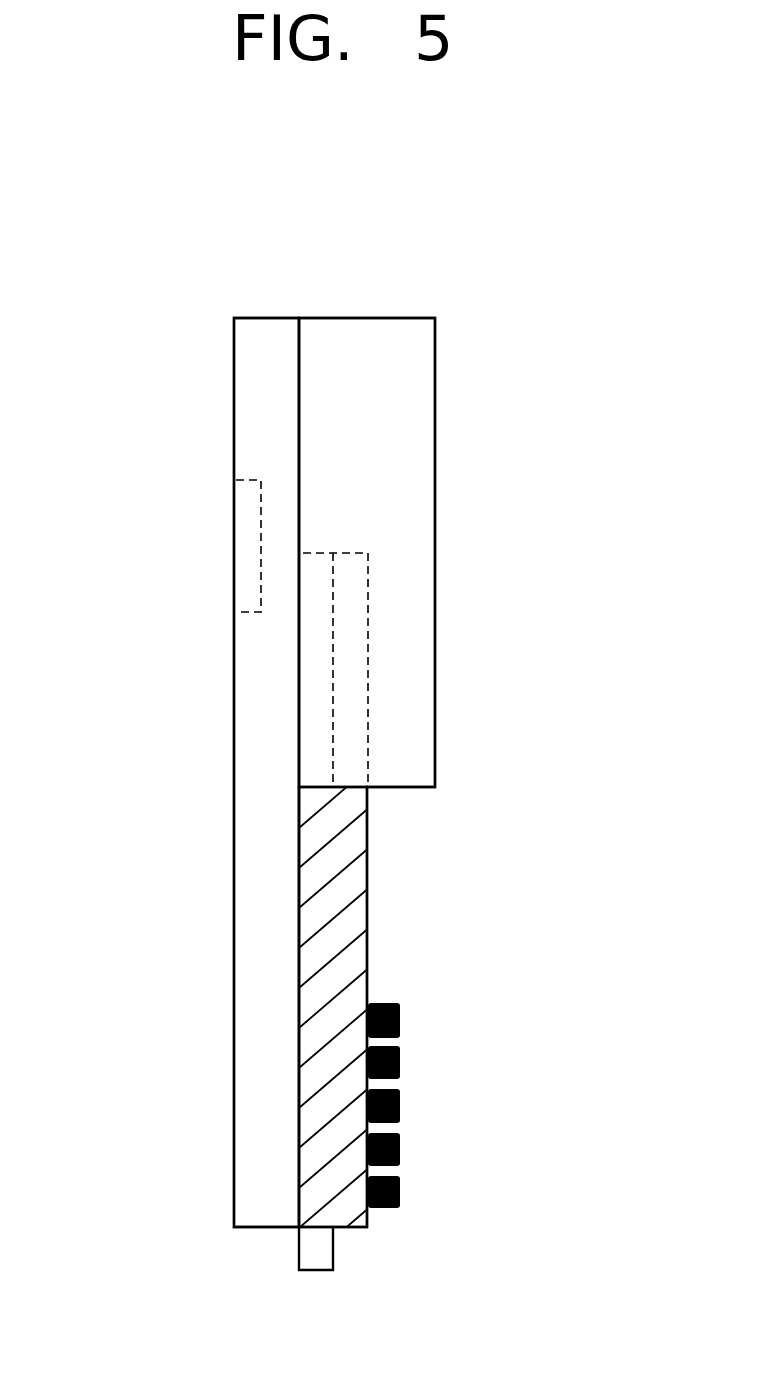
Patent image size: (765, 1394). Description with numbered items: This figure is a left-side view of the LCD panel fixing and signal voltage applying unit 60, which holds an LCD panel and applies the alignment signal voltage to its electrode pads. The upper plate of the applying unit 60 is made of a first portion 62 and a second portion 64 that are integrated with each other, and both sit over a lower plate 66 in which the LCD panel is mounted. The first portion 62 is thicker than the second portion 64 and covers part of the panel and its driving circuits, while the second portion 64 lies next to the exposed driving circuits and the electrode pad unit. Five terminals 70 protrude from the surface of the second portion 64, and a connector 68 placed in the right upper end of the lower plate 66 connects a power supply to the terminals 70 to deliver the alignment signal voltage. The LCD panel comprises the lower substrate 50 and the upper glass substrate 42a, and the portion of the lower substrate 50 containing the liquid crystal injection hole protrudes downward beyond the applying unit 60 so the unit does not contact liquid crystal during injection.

The LCD panel fixing and signal voltage applying unit 60 is at (170, 344).
The first portion 62 is at (410, 378).
The second portion 64 is at (347, 889).
The lower plate 66 is at (252, 917).
The connector 68 is at (247, 552).
The terminals 70 is at (400, 1020).
The lower substrate 50 is at (315, 692).
The upper glass substrate 42a is at (355, 632).